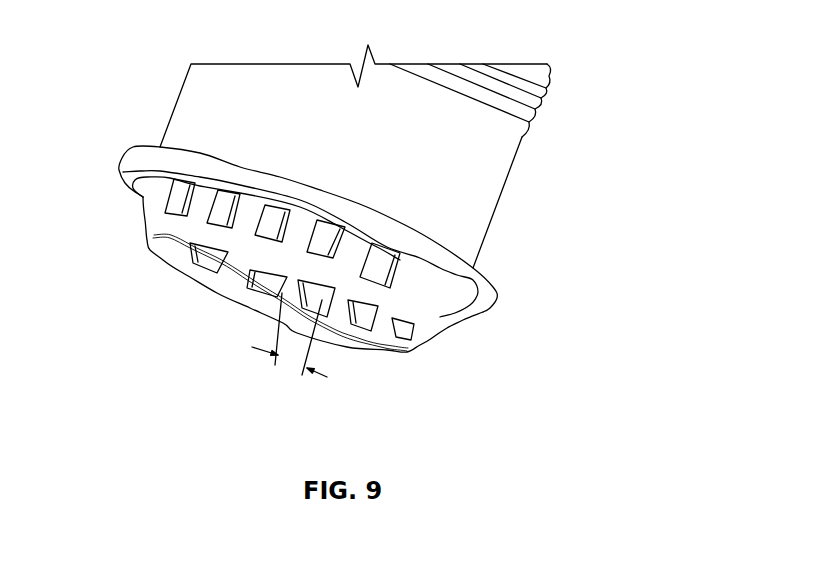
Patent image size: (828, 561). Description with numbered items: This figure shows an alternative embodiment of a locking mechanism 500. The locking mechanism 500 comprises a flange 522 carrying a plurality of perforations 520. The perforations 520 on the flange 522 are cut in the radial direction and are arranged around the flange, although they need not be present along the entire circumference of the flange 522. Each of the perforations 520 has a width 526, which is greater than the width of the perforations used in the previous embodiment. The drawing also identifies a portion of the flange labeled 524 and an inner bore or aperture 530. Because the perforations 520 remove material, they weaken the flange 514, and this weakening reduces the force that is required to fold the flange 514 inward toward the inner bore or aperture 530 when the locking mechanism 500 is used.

The locking mechanism 500 is at (597, 92).
The flange 514 is at (153, 225).
The perforations 520 is at (187, 207).
The flange 522 is at (388, 347).
The flange 524 is at (452, 277).
The width 526 is at (327, 377).
The inner bore or aperture 530 is at (283, 290).